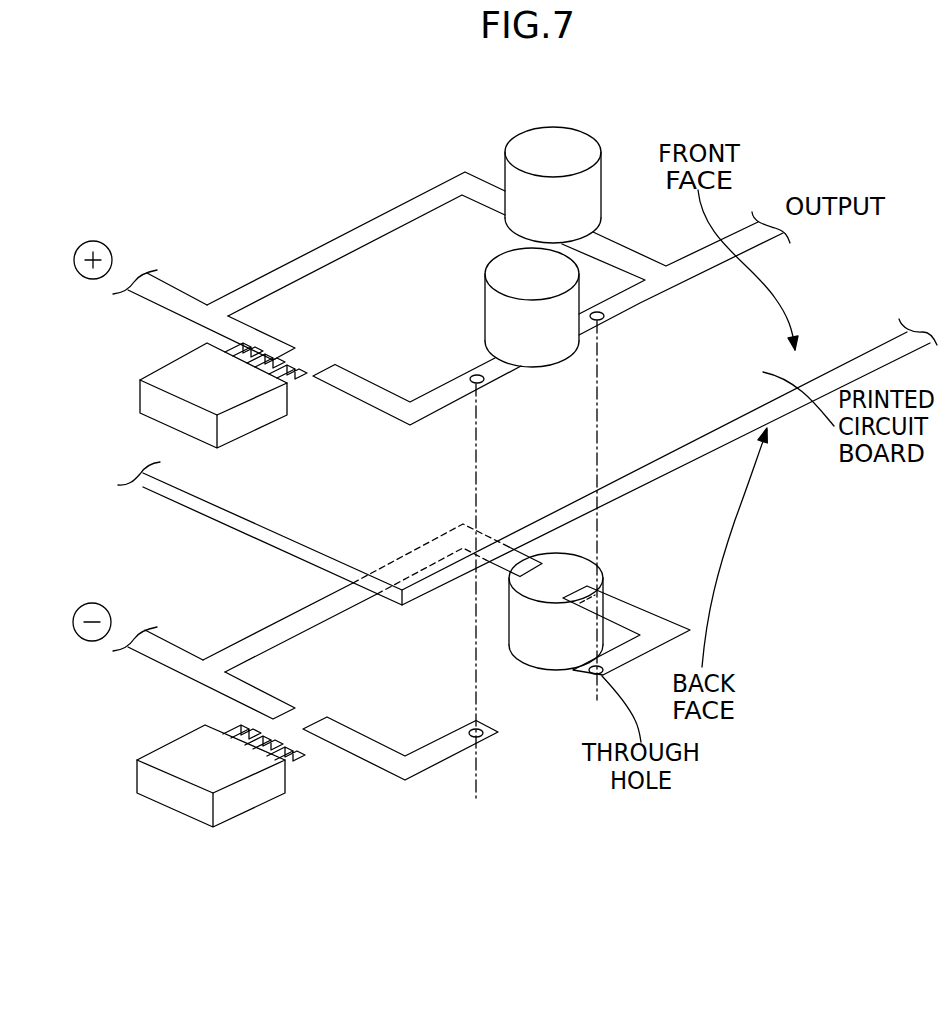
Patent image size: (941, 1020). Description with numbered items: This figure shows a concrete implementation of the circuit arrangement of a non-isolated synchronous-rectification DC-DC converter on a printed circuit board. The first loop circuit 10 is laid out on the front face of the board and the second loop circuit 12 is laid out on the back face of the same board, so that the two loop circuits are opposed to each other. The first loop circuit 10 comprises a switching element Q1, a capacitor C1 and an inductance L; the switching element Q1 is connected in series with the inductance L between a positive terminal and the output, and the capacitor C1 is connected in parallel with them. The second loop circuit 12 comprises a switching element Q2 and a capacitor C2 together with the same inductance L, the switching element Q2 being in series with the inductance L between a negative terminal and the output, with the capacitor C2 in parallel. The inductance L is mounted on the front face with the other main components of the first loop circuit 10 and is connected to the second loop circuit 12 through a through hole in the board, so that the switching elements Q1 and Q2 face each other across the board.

The first loop circuit 10 is at (373, 468).
The second loop circuit 12 is at (373, 630).
The capacitor C1 is at (565, 143).
The capacitor C2 is at (543, 655).
The inductance L is at (545, 350).
The switching element Q1 is at (176, 416).
The switching element Q2 is at (174, 795).